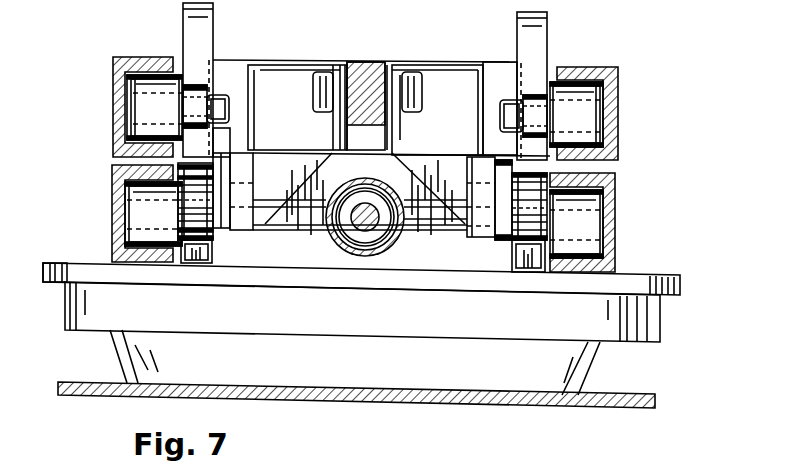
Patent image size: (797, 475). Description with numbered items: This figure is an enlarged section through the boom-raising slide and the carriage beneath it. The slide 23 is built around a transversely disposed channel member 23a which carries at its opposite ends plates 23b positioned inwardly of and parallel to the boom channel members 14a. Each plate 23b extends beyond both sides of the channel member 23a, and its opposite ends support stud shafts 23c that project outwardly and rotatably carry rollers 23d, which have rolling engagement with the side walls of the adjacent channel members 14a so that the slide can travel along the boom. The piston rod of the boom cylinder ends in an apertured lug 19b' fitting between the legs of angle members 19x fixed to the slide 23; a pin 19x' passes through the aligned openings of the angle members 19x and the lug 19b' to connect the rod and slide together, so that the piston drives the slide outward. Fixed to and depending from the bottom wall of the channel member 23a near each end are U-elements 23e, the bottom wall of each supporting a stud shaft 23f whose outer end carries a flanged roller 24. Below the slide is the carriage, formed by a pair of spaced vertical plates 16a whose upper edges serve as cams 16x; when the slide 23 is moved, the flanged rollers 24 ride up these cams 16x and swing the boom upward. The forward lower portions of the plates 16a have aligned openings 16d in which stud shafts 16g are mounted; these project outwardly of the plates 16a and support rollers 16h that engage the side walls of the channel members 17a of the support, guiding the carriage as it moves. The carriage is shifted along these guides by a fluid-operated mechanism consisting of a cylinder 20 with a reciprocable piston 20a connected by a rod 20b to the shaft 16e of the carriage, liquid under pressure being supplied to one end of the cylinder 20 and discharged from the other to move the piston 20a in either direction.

The channel member 14a is at (114, 122).
The carriage plate 16a is at (186, 265).
The opening 16d is at (210, 245).
The shaft 16e is at (430, 226).
The stud shaft 16g is at (610, 214).
The roller 16h is at (130, 217).
The cam 16x is at (200, 42).
The channel member 17a is at (113, 178).
The apertured lug 19b' is at (371, 89).
The angle member 19x is at (369, 50).
The pin 19x' is at (429, 107).
The cylinder 20 is at (349, 258).
The piston 20a is at (380, 242).
The rod 20b is at (363, 203).
The slide 23 is at (227, 139).
The channel member 23a is at (498, 75).
The plate 23b is at (190, 62).
The stud shaft 23c is at (230, 109).
The roller 23d is at (135, 103).
The U-element 23e is at (262, 234).
The stud shaft 23f is at (475, 156).
The flanged roller 24 is at (250, 157).